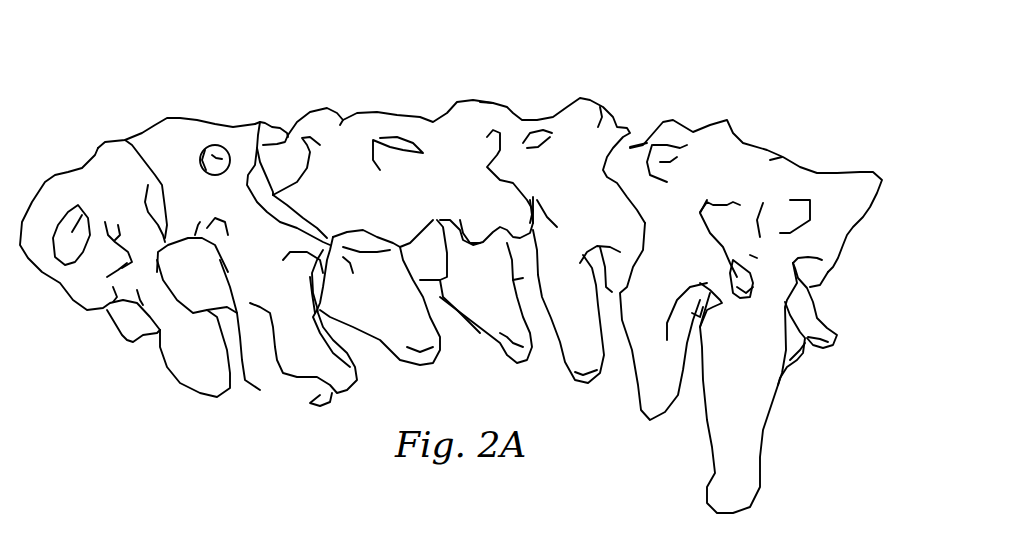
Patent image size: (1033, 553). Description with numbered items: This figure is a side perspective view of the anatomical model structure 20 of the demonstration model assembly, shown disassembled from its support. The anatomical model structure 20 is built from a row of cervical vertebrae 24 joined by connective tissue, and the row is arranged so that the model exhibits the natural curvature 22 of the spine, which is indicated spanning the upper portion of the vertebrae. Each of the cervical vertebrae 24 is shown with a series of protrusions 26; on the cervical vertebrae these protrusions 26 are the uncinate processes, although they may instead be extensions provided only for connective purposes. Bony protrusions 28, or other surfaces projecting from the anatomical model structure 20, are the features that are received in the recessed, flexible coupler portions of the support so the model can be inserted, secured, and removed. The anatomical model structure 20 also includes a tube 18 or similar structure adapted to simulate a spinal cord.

The tube 18 is at (126, 325).
The anatomical model structure 20 is at (451, 267).
The natural curvature 22 is at (473, 231).
The cervical vertebrae 24 is at (90, 221).
The protrusions 26 is at (179, 234).
The bony protrusions 28 is at (522, 301).